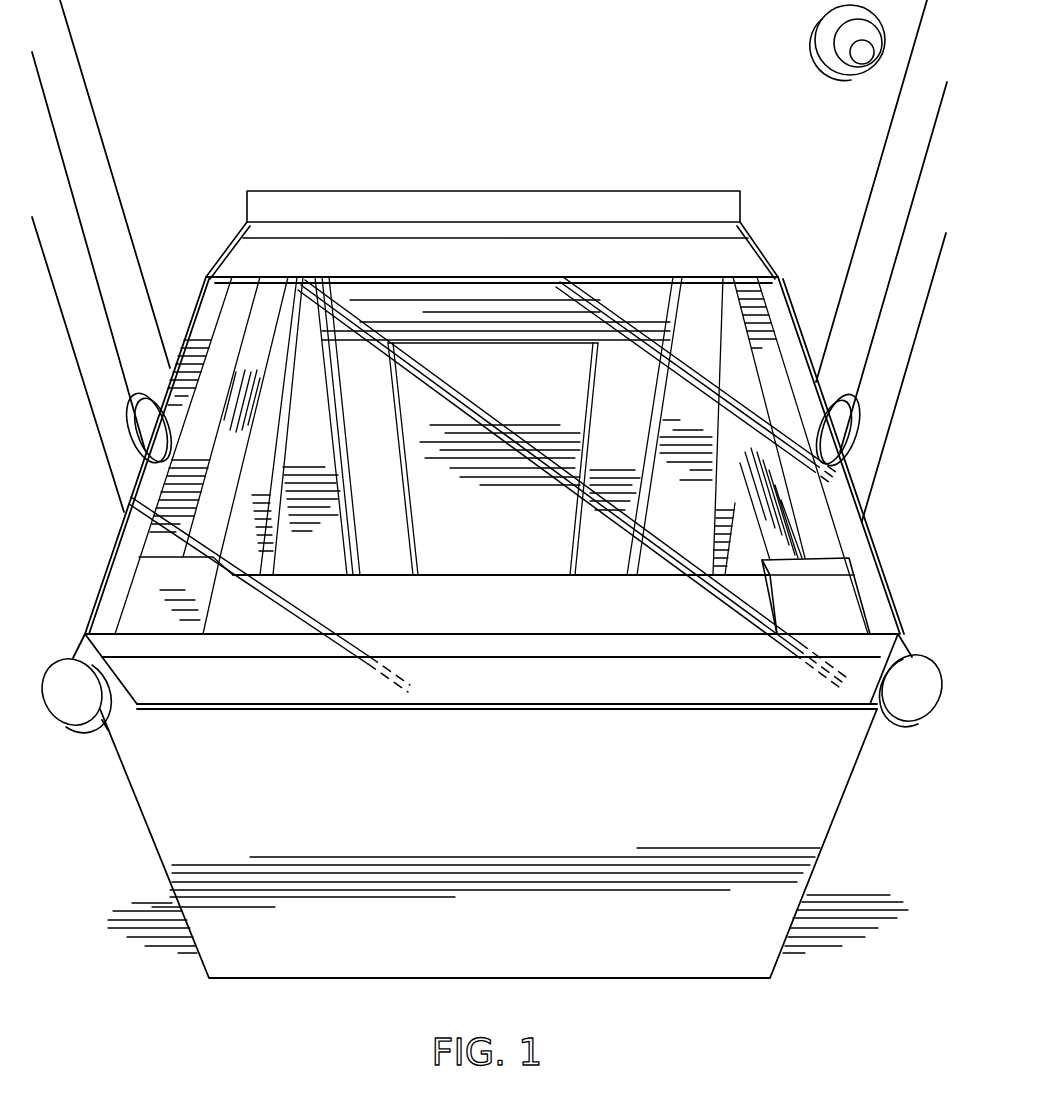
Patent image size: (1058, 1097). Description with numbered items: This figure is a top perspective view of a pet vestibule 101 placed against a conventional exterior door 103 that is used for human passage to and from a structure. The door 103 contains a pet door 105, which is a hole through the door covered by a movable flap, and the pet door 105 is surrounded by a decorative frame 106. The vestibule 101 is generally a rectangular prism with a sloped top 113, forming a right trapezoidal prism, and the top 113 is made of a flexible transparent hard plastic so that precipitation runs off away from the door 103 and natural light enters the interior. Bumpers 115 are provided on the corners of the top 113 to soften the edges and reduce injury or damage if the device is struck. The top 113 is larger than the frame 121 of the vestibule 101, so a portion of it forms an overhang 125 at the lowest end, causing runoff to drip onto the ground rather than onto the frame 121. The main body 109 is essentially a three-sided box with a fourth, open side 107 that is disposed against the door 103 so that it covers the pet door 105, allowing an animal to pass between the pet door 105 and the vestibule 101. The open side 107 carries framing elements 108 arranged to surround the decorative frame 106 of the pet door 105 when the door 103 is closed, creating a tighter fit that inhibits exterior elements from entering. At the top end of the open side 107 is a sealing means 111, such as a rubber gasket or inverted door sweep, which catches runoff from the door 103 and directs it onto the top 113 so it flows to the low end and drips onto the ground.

The vestibule 101 is at (213, 307).
The door 103 is at (203, 151).
The pet door 105 is at (470, 392).
The decorative frame 106 is at (535, 310).
The open side 107 is at (703, 313).
The framing elements 108 is at (300, 388).
The main body 109 is at (273, 853).
The sealing means 111 is at (380, 203).
The top 113 is at (705, 397).
The bumpers 115 is at (60, 677).
The frame 121 is at (187, 477).
The overhang 125 is at (432, 682).